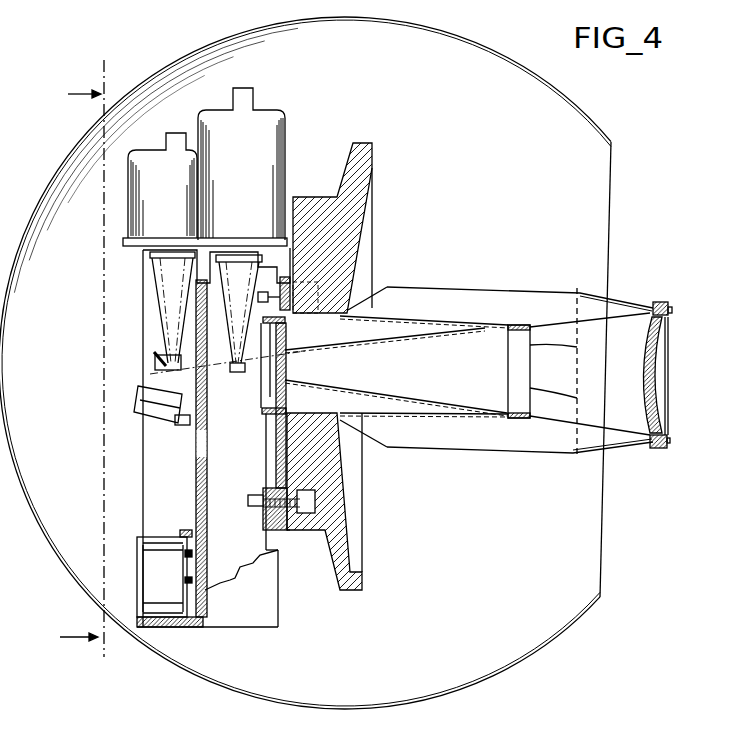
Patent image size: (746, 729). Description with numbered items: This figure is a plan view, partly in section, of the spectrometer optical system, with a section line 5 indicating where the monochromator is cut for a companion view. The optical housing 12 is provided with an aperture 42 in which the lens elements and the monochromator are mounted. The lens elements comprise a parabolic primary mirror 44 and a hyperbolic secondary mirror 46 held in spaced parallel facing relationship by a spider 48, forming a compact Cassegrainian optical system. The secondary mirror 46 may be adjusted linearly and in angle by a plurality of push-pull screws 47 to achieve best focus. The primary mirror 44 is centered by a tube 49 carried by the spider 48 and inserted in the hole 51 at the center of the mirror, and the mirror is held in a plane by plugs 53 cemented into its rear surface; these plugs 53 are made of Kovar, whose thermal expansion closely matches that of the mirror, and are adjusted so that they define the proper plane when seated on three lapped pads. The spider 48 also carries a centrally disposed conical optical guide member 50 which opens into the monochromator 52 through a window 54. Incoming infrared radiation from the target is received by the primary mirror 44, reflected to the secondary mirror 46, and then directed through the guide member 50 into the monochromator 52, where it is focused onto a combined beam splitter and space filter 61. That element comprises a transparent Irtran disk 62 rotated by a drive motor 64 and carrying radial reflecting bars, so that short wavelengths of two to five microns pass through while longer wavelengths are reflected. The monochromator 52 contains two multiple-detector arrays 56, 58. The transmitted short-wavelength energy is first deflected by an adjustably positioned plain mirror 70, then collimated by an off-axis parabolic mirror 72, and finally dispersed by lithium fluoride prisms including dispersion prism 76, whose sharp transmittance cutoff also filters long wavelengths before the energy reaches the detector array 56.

The section line 5- 5 is at (82, 360).
The optical housing 12 is at (513, 668).
The aperture 42 is at (586, 580).
The primary mirror 44 is at (373, 146).
The secondary mirror 46 is at (668, 309).
The push-pull screws 47 is at (264, 489).
The spider 48 is at (543, 291).
The tube 49 is at (422, 317).
The conical optical guide member 50 is at (406, 394).
The hole 51 is at (360, 302).
The monochromator 52 is at (283, 638).
The plugs 53 is at (290, 528).
The window 54 is at (287, 350).
The multiple-detector array 56 is at (153, 165).
The multiple-detector array 58 is at (290, 188).
The combined beam splitter and space filter 61 is at (160, 425).
The disk 62 is at (208, 407).
The drive motor 64 is at (137, 393).
The plain mirror 70 is at (165, 362).
The parabolic mirror 72 is at (152, 252).
The dispersion prism 76 is at (150, 566).